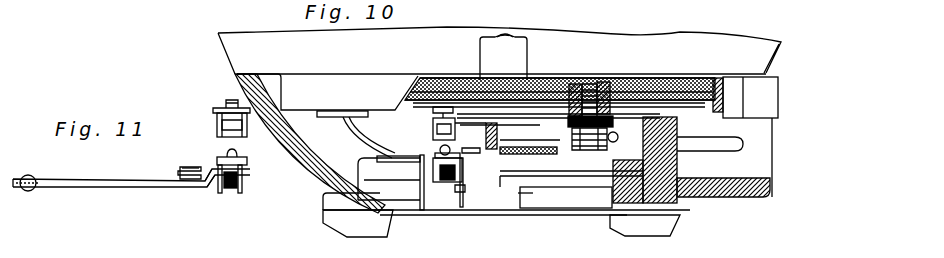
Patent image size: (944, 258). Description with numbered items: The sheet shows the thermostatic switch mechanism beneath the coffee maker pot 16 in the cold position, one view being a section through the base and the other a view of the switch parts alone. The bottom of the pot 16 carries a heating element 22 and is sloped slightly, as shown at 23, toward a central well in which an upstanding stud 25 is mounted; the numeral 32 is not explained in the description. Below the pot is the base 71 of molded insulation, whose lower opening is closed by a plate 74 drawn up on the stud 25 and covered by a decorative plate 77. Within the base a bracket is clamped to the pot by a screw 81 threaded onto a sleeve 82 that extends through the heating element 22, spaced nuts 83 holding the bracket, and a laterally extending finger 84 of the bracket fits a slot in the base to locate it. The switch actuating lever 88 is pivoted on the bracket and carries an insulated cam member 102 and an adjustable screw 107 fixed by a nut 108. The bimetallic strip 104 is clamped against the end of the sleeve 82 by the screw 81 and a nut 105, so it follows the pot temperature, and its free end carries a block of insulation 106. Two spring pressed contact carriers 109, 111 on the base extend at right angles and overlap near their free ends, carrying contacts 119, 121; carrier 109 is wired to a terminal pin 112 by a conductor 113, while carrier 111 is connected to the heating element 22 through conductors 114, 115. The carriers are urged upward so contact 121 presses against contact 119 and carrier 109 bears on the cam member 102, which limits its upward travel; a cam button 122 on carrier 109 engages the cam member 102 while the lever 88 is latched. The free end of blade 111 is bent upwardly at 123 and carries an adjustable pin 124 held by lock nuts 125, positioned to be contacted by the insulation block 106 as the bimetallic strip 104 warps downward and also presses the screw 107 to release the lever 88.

In FIG. 10, the pot 16 is at (222, 44).
In FIG. 10, the heating element 22 is at (652, 82).
In FIG. 10, the sloped bottom 23 is at (613, 76).
In FIG. 10, the stud 25 is at (503, 33).
In FIG. 10, the button body 32 is at (503, 57).
In FIG. 10, the base 71 is at (299, 165).
In FIG. 10, the plate 74 is at (563, 216).
In FIG. 10, the decorative plate 77 is at (530, 222).
In FIG. 10, the screw 81 is at (590, 82).
In FIG. 10, the sleeve 82 is at (575, 84).
In FIG. 10, the nuts 83 is at (612, 142).
In FIG. 10, the finger 84 is at (700, 110).
In FIG. 10, the switch actuating lever 88 is at (556, 153).
In FIG. 10, the cam member 102 is at (473, 165).
In FIG. 10, the bimetallic strip 104 is at (433, 126).
In FIG. 11, the bimetallic strip 104 is at (217, 113).
In FIG. 10, the nut 105 is at (574, 150).
In FIG. 10, the block of insulation 106 is at (433, 138).
In FIG. 11, the block of insulation 106 is at (240, 130).
In FIG. 10, the screw 107 is at (486, 140).
In FIG. 10, the nut 108 is at (521, 193).
In FIG. 10, the contact carrier 109 is at (560, 177).
In FIG. 11, the contact carrier 109 is at (190, 166).
In FIG. 10, the contact carrier 111 is at (420, 182).
In FIG. 11, the contact carrier 111 is at (92, 179).
In FIG. 10, the terminal pin 112 is at (720, 150).
In FIG. 10, the conductor 113 is at (633, 177).
In FIG. 10, the conductor 114 is at (377, 157).
In FIG. 11, the conductor 114 is at (42, 191).
In FIG. 10, the conductor 115 is at (351, 134).
In FIG. 11, the contact 119 is at (178, 170).
In FIG. 11, the contact 121 is at (190, 181).
In FIG. 10, the cam button 122 is at (470, 172).
In FIG. 10, the upwardly bent end 123 is at (420, 199).
In FIG. 11, the upwardly bent end 123 is at (220, 194).
In FIG. 10, the adjustable pin 124 is at (440, 149).
In FIG. 11, the adjustable pin 124 is at (242, 156).
In FIG. 10, the lock nuts 125 is at (412, 170).
In FIG. 11, the lock nuts 125 is at (244, 180).